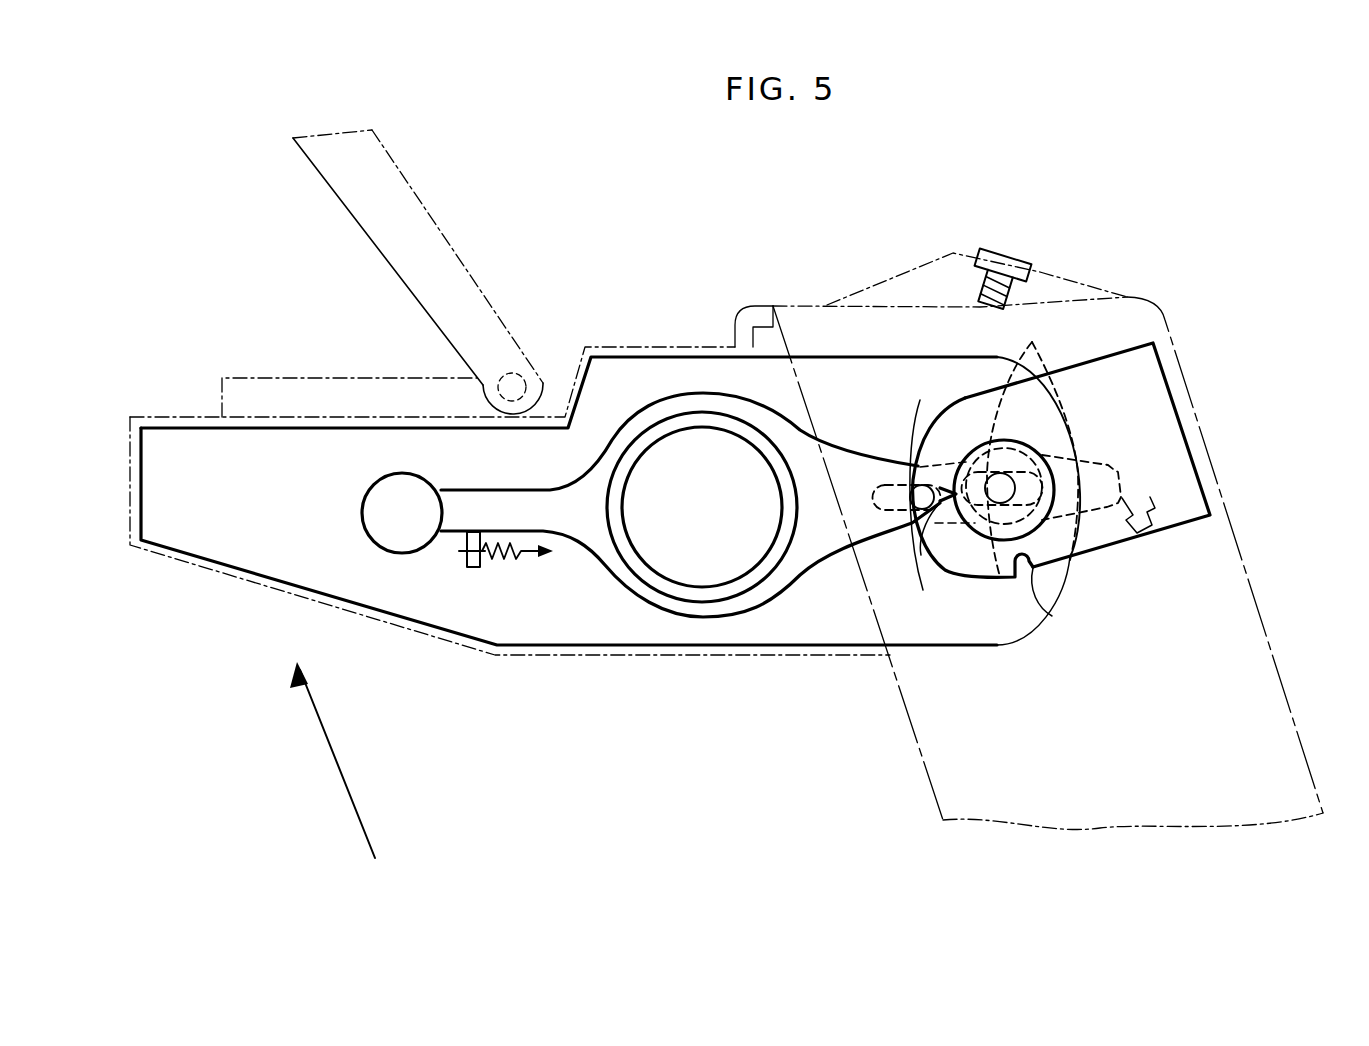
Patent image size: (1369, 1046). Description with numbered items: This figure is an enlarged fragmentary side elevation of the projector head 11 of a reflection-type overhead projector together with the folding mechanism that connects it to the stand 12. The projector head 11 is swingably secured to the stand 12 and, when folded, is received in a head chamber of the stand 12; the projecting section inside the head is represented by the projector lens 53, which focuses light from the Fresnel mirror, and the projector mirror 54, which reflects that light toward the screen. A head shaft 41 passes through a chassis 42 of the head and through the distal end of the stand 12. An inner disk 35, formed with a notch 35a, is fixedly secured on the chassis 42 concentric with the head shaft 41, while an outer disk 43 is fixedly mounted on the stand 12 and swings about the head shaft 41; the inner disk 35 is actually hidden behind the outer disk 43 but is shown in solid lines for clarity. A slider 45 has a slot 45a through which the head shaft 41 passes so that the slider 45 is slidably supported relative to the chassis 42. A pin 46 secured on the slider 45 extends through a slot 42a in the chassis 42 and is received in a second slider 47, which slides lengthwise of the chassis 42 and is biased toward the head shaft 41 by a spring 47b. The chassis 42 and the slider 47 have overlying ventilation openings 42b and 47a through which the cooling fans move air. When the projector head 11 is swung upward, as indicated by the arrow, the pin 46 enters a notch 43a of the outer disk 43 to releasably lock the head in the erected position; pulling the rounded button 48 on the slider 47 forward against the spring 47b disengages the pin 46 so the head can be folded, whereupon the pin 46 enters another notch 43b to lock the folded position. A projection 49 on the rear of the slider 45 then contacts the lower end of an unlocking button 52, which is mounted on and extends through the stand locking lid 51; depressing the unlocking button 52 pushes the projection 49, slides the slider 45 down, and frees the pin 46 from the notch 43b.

The projector head 11 is at (591, 338).
The stand 12 is at (1293, 688).
The inner disk 35 is at (987, 545).
The notch 35a is at (921, 556).
The head shaft 41 is at (1015, 488).
The chassis 42 is at (184, 538).
The slot 42a is at (880, 495).
The ventilation opening 42b is at (712, 430).
The outer disk 43 is at (1123, 348).
The notch 43a is at (922, 476).
The notch 43b is at (1040, 592).
The slider 45 is at (1116, 462).
The slot 45a is at (1040, 348).
The pin 46 is at (912, 525).
The slider 47 is at (678, 400).
The ventilation opening 47a is at (645, 582).
The spring 47b is at (522, 560).
The rounded button 48 is at (397, 555).
The projection 49 is at (1153, 500).
The stand locking lid 51 is at (1050, 262).
The unlocking button 52 is at (1003, 256).
The projector lens 53 is at (292, 376).
The projector mirror 54 is at (352, 217).